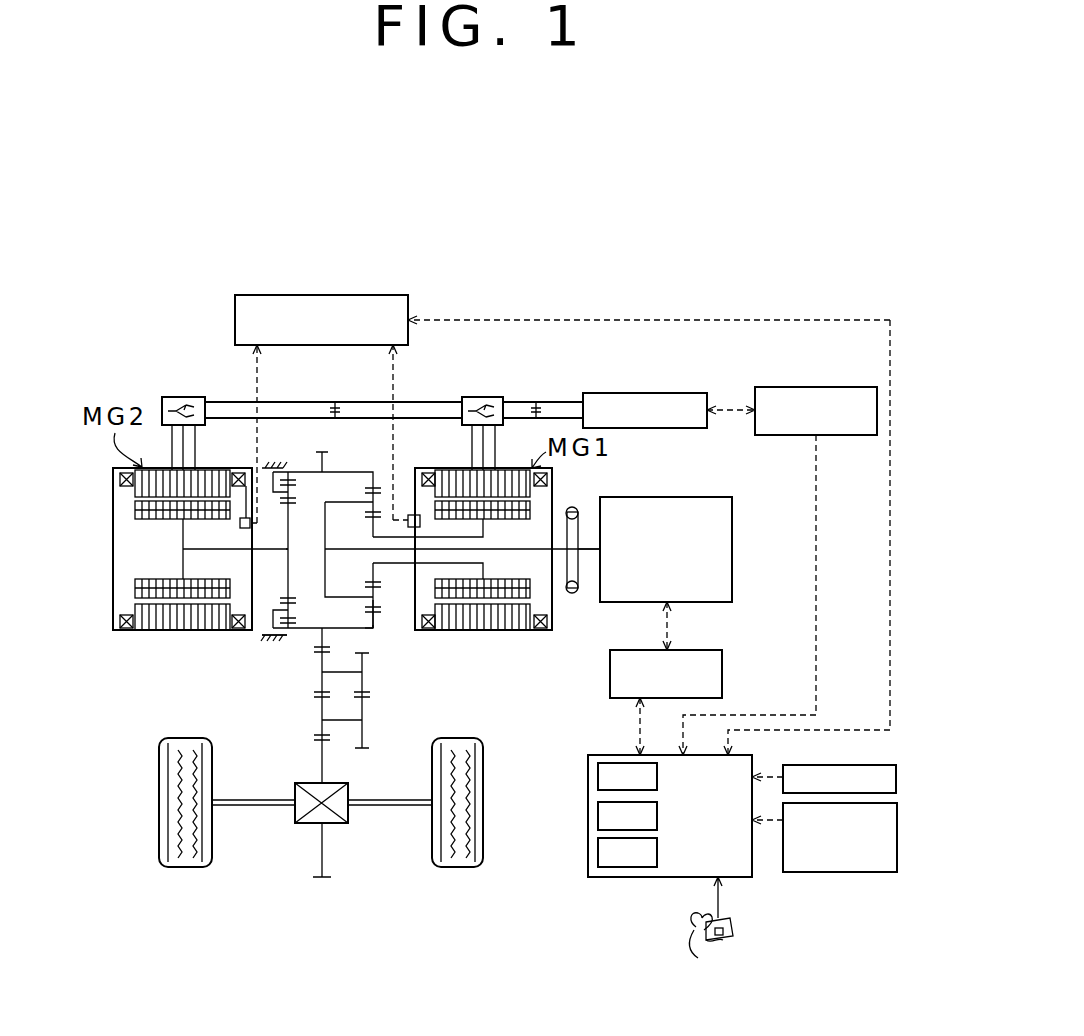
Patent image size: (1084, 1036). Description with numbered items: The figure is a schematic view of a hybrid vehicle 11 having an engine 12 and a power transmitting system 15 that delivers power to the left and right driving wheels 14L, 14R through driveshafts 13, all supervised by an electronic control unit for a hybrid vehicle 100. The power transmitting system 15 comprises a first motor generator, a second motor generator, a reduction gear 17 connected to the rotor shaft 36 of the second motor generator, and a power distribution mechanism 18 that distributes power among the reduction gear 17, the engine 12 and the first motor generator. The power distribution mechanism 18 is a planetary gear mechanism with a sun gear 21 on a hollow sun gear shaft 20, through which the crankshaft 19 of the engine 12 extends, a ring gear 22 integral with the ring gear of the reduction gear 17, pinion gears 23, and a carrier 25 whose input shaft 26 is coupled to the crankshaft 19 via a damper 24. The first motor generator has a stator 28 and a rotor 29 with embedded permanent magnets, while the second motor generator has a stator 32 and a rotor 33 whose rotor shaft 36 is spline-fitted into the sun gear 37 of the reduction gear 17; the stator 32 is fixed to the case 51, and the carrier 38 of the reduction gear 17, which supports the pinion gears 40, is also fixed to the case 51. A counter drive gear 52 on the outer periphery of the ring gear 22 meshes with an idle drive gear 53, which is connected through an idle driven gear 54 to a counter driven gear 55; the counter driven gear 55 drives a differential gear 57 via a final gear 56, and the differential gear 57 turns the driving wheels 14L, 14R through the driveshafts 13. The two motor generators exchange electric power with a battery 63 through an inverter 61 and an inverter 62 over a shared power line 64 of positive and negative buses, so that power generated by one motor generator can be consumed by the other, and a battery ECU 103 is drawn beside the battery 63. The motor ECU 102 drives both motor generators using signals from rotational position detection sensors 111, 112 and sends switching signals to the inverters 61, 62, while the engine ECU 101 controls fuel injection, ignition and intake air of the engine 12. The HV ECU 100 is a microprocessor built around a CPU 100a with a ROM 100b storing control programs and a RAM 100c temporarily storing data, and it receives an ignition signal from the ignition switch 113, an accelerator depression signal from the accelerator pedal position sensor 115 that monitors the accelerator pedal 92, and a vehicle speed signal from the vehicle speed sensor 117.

The hybrid vehicle 11 is at (586, 272).
The engine 12 is at (683, 497).
The driveshafts 13 is at (377, 810).
The left driving wheel 14L is at (182, 738).
The right driving wheel 14R is at (475, 717).
The power transmitting system 15 is at (165, 563).
The reduction gear 17 is at (288, 461).
The power distribution mechanism 18 is at (372, 468).
The crankshaft 19 is at (595, 552).
The sun gear shaft 20 is at (483, 527).
The sun gear 21 is at (382, 608).
The ring gear 22 is at (372, 632).
The pinion gears 23 is at (368, 625).
The damper 24 is at (575, 594).
The carrier 25 is at (350, 502).
The input shaft 26 is at (519, 567).
The stator 28 is at (503, 477).
The rotor 29 is at (528, 508).
The stator 32 is at (212, 476).
The rotor 33 is at (158, 522).
The rotor shaft 36 is at (205, 550).
The sun gear 37 is at (285, 552).
The carrier 38 is at (265, 635).
The pinion gears 40 is at (297, 607).
The case 51 is at (273, 648).
The counter drive gear 52 is at (313, 635).
The idle drive gear 53 is at (322, 685).
The idle driven gear 54 is at (368, 712).
The counter driven gear 55 is at (368, 748).
The final gear 56 is at (322, 730).
The differential gear 57 is at (322, 850).
The inverter 61 is at (487, 397).
The inverter 62 is at (187, 396).
The battery 63 is at (628, 393).
The power line 64 is at (427, 410).
The accelerator pedal 92 is at (702, 942).
The electronic control unit for a hybrid vehicle 100 is at (630, 816).
The CPU 100a is at (657, 777).
The ROM 100b is at (657, 817).
The RAM 100c is at (657, 853).
The engine ECU 101 is at (610, 676).
The motor ECU 102 is at (323, 295).
The battery ECU 103 is at (843, 373).
The rotational position detection sensor 111 is at (412, 515).
The rotational position detection sensor 112 is at (240, 528).
The ignition switch 113 is at (880, 765).
The accelerator pedal position sensor 115 is at (724, 940).
The vehicle speed sensor 117 is at (897, 838).